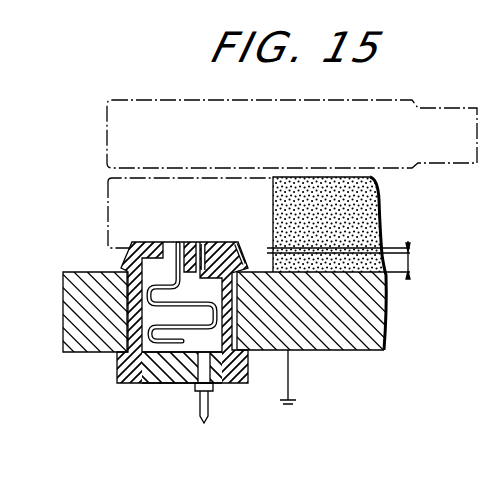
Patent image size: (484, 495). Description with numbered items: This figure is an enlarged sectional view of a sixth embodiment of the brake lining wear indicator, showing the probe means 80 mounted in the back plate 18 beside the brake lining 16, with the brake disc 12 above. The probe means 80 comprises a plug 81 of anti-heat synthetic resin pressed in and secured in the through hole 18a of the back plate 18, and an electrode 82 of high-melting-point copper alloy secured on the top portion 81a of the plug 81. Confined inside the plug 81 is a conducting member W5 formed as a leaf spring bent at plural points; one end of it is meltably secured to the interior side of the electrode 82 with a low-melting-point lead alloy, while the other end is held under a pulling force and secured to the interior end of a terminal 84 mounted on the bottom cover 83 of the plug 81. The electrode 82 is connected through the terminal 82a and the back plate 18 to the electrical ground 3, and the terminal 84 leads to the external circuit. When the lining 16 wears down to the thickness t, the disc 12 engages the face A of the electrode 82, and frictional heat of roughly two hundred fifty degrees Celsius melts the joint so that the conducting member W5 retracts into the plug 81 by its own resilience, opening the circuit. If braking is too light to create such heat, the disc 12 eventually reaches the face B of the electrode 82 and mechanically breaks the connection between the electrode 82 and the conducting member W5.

The disc 12 is at (348, 107).
The lining 16 is at (357, 198).
The back plate 18 is at (372, 334).
The through hole 18a is at (130, 340).
The probe means 80 is at (115, 263).
The plug 81 is at (133, 245).
The top portion 81a is at (233, 274).
The electrode 82 is at (168, 247).
The terminal 82a is at (243, 266).
The bottom cover 83 is at (163, 385).
The terminal 84 is at (210, 401).
The conducting member W5 is at (260, 355).
The electrical ground 3 is at (297, 402).
The face of the electrode A is at (394, 247).
The face of the electrode B is at (392, 272).
The thickness t is at (410, 265).